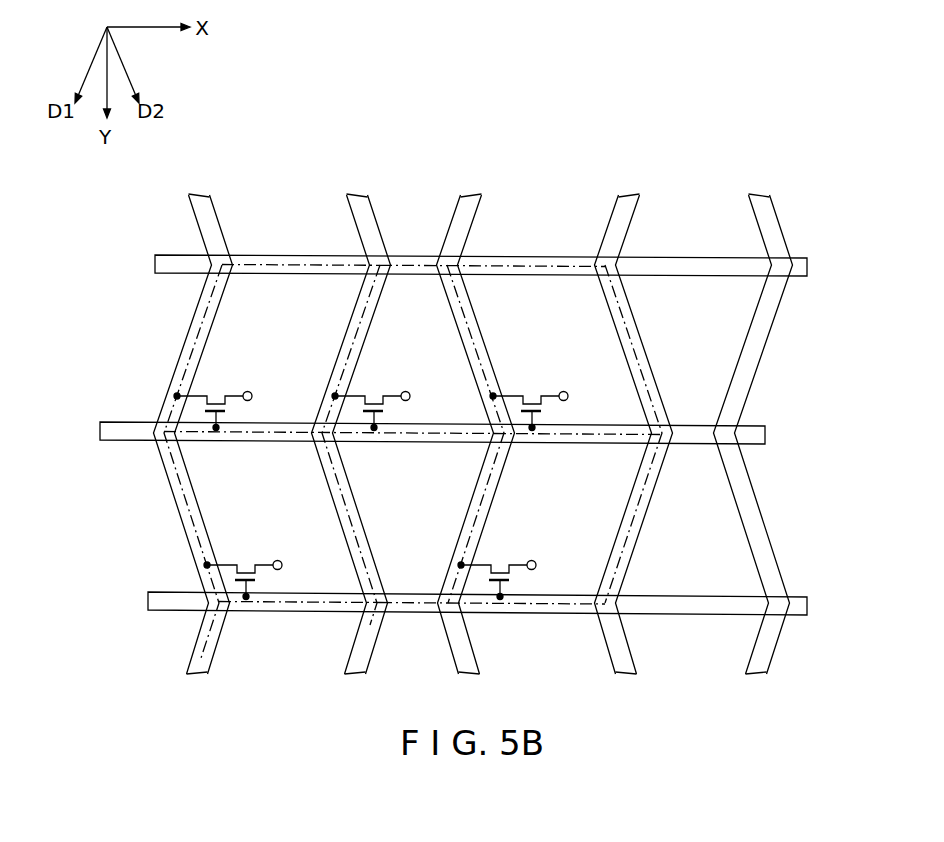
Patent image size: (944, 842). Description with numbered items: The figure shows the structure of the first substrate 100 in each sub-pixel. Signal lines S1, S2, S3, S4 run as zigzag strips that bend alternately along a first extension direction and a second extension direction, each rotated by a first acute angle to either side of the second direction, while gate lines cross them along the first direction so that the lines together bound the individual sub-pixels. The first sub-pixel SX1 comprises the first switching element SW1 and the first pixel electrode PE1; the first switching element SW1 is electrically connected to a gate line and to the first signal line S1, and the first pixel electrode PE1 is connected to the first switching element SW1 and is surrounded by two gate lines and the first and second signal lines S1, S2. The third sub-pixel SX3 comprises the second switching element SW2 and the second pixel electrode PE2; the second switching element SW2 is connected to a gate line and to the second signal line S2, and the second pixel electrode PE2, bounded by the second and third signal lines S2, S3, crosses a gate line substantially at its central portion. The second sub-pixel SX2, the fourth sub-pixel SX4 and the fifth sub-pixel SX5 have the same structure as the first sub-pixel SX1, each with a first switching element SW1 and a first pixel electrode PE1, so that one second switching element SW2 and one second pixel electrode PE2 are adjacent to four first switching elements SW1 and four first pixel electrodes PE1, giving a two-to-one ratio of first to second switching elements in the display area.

The first substrate 100 is at (600, 114).
The first signal line S1 is at (198, 193).
The second signal line S2 is at (356, 194).
The third signal line S3 is at (470, 194).
The fourth signal line S4 is at (627, 194).
The first sub-pixel SX1 is at (311, 264).
The second sub-pixel SX2 is at (510, 265).
The third sub-pixel SX3 is at (408, 265).
The fourth sub-pixel SX4 is at (283, 603).
The fifth sub-pixel SX5 is at (550, 605).
The first switching element SW1 is at (378, 471).
The second switching element SW2 is at (378, 387).
The first pixel electrode PE1 is at (431, 467).
The second pixel electrode PE2 is at (431, 382).